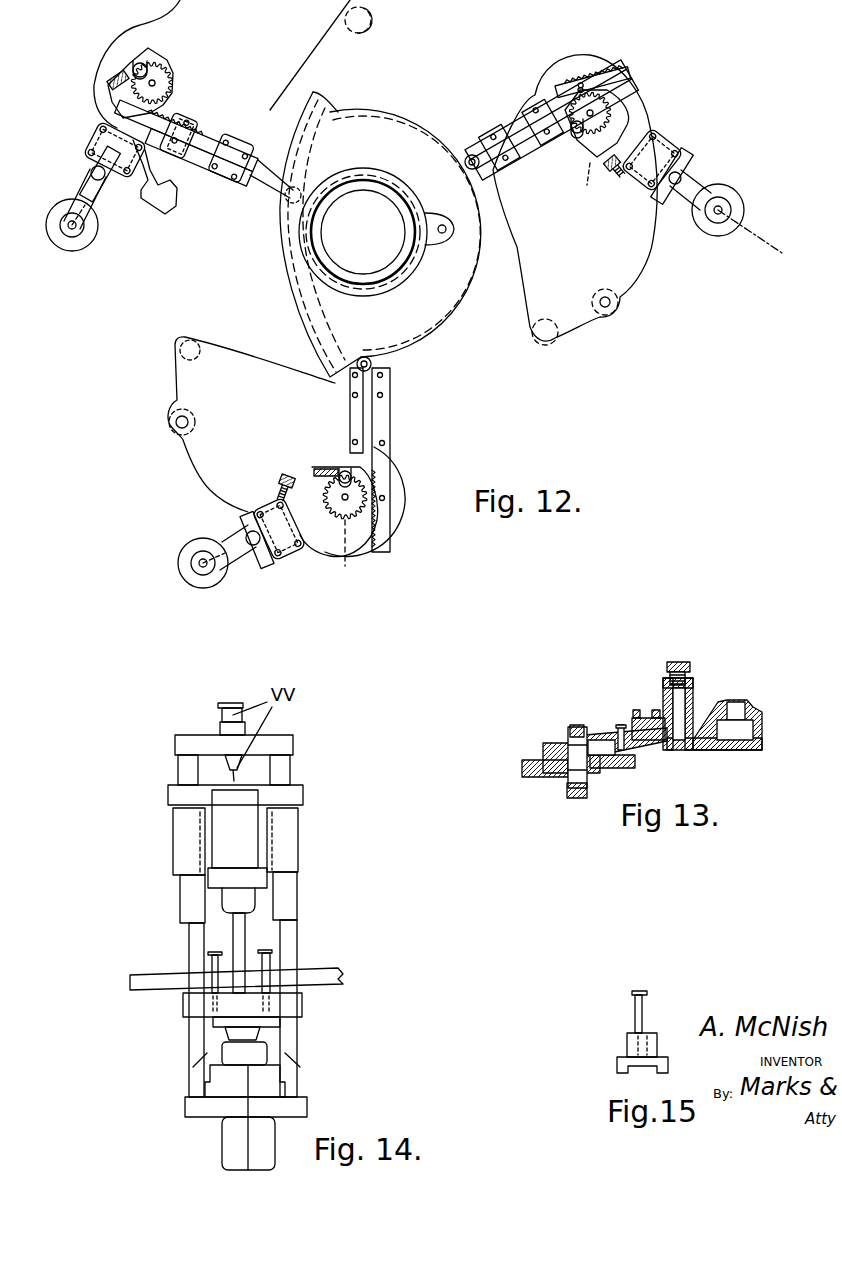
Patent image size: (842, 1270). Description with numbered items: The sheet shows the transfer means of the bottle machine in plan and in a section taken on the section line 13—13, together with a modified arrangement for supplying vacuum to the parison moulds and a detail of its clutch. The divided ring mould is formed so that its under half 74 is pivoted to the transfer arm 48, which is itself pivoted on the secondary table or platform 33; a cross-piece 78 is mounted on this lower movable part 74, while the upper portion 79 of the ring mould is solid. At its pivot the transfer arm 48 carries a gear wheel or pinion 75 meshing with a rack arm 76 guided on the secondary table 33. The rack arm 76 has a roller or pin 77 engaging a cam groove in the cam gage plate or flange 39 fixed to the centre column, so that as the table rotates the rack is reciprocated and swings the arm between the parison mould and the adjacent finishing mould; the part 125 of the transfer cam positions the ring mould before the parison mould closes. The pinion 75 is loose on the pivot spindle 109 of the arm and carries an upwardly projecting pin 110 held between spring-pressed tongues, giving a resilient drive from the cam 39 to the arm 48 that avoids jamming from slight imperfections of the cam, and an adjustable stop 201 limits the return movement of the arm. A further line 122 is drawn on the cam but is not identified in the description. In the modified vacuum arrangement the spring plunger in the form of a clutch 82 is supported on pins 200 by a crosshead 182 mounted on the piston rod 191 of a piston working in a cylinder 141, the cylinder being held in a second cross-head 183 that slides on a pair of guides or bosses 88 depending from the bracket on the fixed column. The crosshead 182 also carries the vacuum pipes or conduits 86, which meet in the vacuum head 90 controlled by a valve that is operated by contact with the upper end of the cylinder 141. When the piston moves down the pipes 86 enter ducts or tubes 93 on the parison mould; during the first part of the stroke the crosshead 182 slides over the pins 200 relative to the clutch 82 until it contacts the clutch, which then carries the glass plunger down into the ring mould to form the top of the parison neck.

In FIG. 12, the section line 13 is at (550, 85).
In FIG. 12, the secondary table 33 is at (640, 275).
In FIG. 13, the secondary table 33 is at (533, 778).
In FIG. 12, the transfer cam 39 is at (428, 322).
In FIG. 12, the transfer arm 48 is at (120, 100).
In FIG. 13, the under half of the ring mould 74 is at (713, 750).
In FIG. 12, the gear wheel or segment 75 is at (173, 67).
In FIG. 13, the gear wheel or segment 75 is at (595, 737).
In FIG. 12, the rack arm 76 is at (152, 132).
In FIG. 12, the roller or pin 77 is at (466, 156).
In FIG. 12, the cross-piece 78 is at (85, 190).
In FIG. 13, the cross-piece 78 is at (687, 665).
In FIG. 13, the upper portion of the ring mould 79 is at (720, 712).
In FIG. 14, the spring plunger 82 is at (250, 1022).
In FIG. 15, the spring plunger 82 is at (657, 1063).
In FIG. 14, the vacuum pipes 86 is at (200, 1045).
In FIG. 14, the guides or bosses 88 is at (187, 835).
In FIG. 14, the vacuum head 90 is at (202, 742).
In FIG. 14, the ducts or tubes 93 is at (200, 1089).
In FIG. 13, the pivot spindle 109 is at (550, 750).
In FIG. 12, the upwardly projecting pin 110 is at (577, 133).
In FIG. 12, the inner cam track 122 is at (297, 333).
In FIG. 12, the part of the transfer cam 125 is at (330, 110).
In FIG. 14, the cylinder 141 is at (219, 846).
In FIG. 14, the crosshead 182 is at (182, 1012).
In FIG. 15, the crosshead 182 is at (628, 1045).
In FIG. 14, the second cross-head 183 is at (177, 790).
In FIG. 14, the piston rod 191 is at (240, 932).
In FIG. 12, the pins 200 is at (582, 187).
In FIG. 14, the pins 200 is at (267, 963).
In FIG. 15, the pins 200 is at (643, 1016).
In FIG. 12, the adjustable stop 201 is at (615, 170).